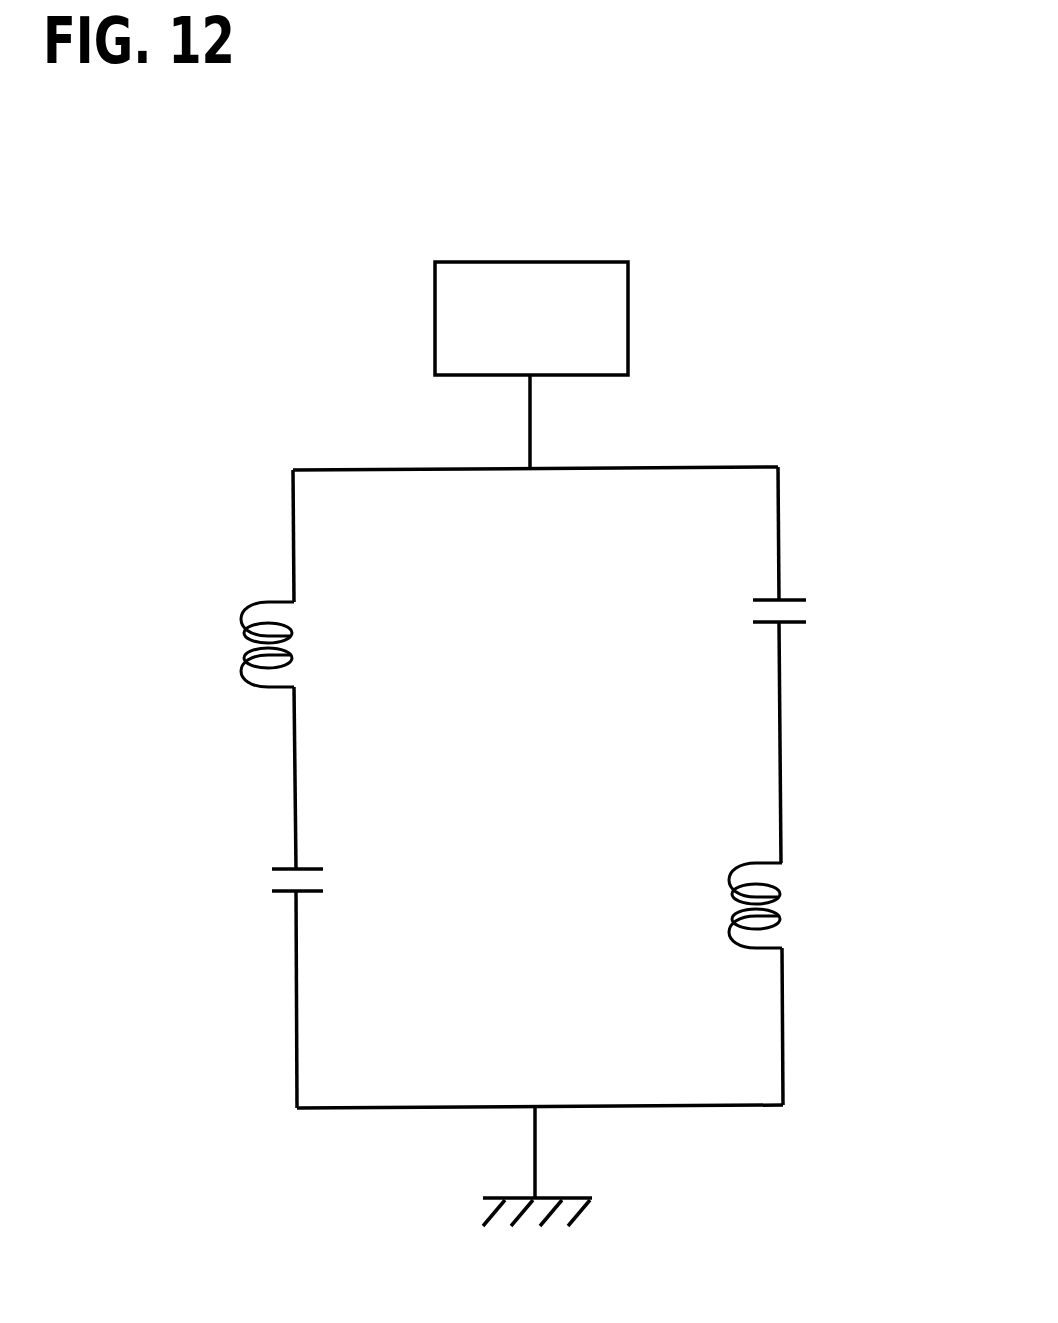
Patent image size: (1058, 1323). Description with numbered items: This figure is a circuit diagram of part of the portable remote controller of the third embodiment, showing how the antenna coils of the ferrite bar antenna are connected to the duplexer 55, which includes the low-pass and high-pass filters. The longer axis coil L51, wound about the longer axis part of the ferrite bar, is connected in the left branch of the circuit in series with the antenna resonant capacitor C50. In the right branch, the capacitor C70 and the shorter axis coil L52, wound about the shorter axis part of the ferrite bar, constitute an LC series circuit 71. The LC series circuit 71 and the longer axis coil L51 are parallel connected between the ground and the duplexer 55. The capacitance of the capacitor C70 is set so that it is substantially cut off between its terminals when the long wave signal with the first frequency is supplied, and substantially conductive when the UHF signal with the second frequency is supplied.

The duplexer 55 is at (628, 318).
The LC series circuit 71 is at (569, 800).
The longer axis coil L51 is at (236, 644).
The antenna resonant capacitor C50 is at (261, 880).
The capacitor C70 is at (813, 611).
The shorter axis coil L52 is at (793, 905).